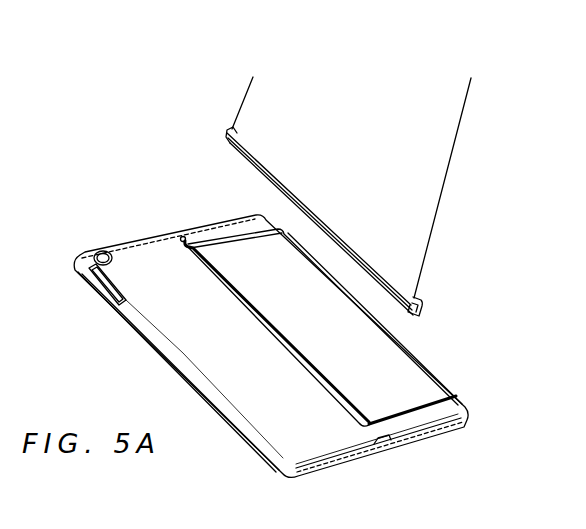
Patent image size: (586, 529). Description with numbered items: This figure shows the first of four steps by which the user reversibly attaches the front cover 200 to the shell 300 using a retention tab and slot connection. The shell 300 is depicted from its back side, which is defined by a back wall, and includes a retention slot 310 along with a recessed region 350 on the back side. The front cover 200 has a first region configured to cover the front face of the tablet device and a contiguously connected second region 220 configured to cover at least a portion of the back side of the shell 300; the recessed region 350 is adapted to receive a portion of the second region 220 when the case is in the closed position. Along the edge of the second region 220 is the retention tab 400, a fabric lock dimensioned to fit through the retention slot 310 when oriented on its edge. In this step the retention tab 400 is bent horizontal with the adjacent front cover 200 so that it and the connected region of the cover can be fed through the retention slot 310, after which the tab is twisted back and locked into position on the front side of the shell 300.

The front cover 200 is at (452, 183).
The second region 220 is at (433, 227).
The retention tab 400 is at (399, 305).
The shell 300 is at (436, 435).
The recessed region 350 is at (415, 388).
The retention slot 310 is at (347, 408).